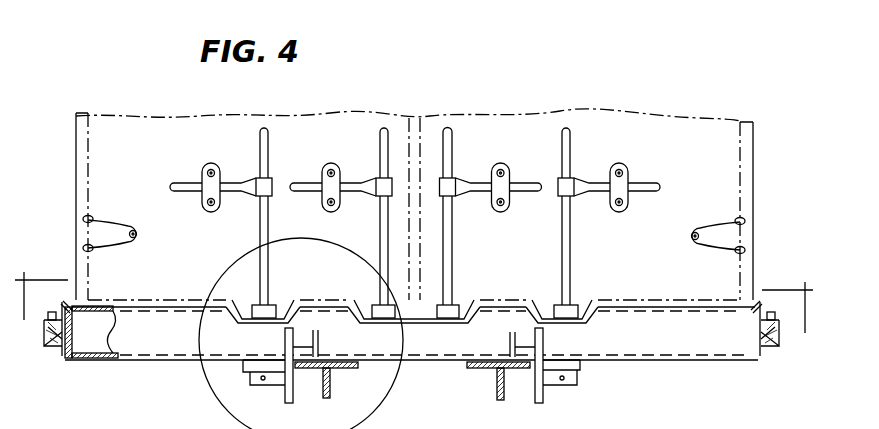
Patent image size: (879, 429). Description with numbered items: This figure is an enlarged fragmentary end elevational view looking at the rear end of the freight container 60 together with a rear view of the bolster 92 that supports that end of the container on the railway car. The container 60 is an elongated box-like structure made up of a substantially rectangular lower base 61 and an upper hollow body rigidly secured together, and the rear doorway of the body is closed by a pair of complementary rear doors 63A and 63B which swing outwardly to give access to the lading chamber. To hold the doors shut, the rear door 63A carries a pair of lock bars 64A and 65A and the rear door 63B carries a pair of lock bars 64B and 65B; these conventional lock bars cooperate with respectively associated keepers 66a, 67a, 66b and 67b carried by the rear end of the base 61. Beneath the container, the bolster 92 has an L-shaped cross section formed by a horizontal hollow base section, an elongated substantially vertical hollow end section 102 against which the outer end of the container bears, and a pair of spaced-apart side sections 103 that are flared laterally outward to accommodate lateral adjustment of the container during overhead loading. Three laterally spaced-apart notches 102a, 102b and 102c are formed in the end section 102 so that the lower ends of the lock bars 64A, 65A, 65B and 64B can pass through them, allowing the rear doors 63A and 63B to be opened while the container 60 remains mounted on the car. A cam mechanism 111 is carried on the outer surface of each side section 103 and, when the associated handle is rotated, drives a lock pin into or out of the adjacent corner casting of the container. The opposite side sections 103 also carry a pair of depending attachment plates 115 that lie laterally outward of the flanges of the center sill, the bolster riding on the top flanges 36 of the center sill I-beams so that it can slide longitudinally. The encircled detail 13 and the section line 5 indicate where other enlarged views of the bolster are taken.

The container 60 is at (155, 106).
The rear door 63A is at (303, 128).
The rear door 63B is at (540, 128).
The lock bar 64A is at (258, 213).
The lock bar 65A is at (380, 208).
The lock bar 65B is at (452, 245).
The lock bar 64B is at (570, 258).
The keeper 66a is at (268, 305).
The keeper 67a is at (375, 306).
The keeper 67b is at (451, 306).
The keeper 66b is at (560, 306).
The lower base 61 is at (420, 316).
The end section 102 is at (671, 353).
The notch 102a is at (250, 321).
The notch 102b is at (388, 322).
The notch 102c is at (568, 320).
The bolster 92 is at (138, 346).
The side section 103 is at (752, 310).
The cam mechanism 111 is at (766, 337).
The attachment plate 115 is at (760, 356).
The top flange 36 is at (480, 369).
The detail circle 13 is at (385, 395).
The section line 5 is at (414, 295).